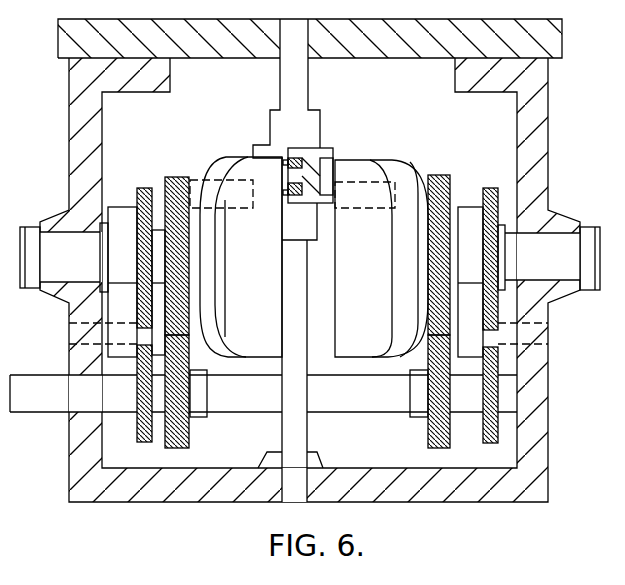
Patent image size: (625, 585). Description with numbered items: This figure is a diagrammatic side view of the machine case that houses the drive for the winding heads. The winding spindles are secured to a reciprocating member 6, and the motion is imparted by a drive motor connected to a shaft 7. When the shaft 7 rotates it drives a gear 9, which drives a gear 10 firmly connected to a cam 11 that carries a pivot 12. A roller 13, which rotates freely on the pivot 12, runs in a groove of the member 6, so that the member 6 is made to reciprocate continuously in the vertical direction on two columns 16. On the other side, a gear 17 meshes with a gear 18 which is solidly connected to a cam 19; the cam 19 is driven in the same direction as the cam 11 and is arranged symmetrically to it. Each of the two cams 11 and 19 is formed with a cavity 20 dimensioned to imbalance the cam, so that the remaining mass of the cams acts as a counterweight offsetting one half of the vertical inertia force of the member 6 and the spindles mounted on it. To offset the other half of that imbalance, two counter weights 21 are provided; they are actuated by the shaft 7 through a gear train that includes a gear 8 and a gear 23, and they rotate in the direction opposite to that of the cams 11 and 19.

The reciprocating member 6 is at (333, 160).
The shaft 7 is at (80, 400).
The gear 8 is at (140, 442).
The gear 9 is at (175, 448).
The gear 10 is at (172, 177).
The cam 11 is at (262, 340).
The pivot 12 is at (290, 198).
The roller 13 is at (302, 165).
The columns 16 is at (290, 437).
The gear 17 is at (428, 438).
The gear 18 is at (450, 187).
The cam 19 is at (352, 338).
The cavity 20 is at (215, 183).
The counter weights 21 is at (125, 295).
The gear 23 is at (145, 188).